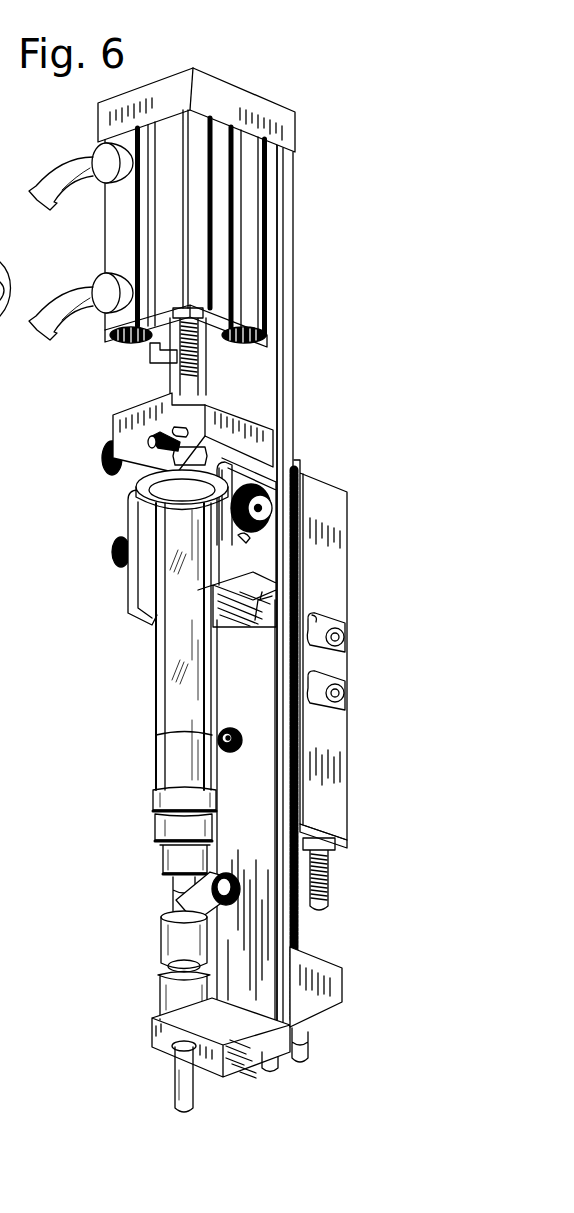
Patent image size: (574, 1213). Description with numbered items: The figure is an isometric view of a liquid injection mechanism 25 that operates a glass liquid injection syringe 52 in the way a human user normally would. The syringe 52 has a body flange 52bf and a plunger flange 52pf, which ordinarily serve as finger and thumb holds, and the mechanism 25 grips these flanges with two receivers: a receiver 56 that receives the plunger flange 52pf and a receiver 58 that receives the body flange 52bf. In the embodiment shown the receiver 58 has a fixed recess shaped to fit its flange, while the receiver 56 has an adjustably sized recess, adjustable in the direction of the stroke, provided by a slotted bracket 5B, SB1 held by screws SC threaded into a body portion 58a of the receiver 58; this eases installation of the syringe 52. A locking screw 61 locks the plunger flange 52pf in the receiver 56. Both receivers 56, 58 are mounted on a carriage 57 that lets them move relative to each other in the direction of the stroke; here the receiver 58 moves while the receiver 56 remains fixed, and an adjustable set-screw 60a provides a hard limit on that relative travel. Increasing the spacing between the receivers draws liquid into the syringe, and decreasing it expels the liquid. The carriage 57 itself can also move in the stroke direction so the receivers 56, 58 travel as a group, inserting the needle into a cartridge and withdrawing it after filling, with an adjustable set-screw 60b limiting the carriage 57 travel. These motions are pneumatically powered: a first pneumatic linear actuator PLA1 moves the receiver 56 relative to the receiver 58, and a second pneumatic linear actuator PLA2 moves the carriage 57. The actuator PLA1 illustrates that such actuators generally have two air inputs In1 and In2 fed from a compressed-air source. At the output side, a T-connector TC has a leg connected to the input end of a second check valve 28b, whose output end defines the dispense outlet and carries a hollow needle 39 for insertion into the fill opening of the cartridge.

The liquid injection mechanism 25 is at (283, 72).
The carriage 57 is at (288, 238).
The first pneumatic linear actuator PLA1 is at (255, 176).
The air input In1 is at (106, 157).
The air input In2 is at (106, 288).
The adjustable set-screw 60a is at (192, 343).
The receiver 56 is at (100, 442).
The locking screw 61 is at (104, 460).
The plunger flange 52pf is at (150, 436).
The slotted bracket 5B is at (240, 484).
The receiver 58 is at (108, 556).
The screws SC is at (266, 517).
The slotted bracket SB1 is at (247, 538).
The body portion 58a is at (265, 600).
The body flange 52bf is at (140, 484).
The liquid injection syringe 52 is at (156, 726).
The T-connector TC is at (154, 887).
The second check valve 28b is at (149, 940).
The hollow needle 39 is at (194, 1086).
The second pneumatic linear actuator PLA2 is at (330, 816).
The adjustable set-screw 60b is at (306, 880).